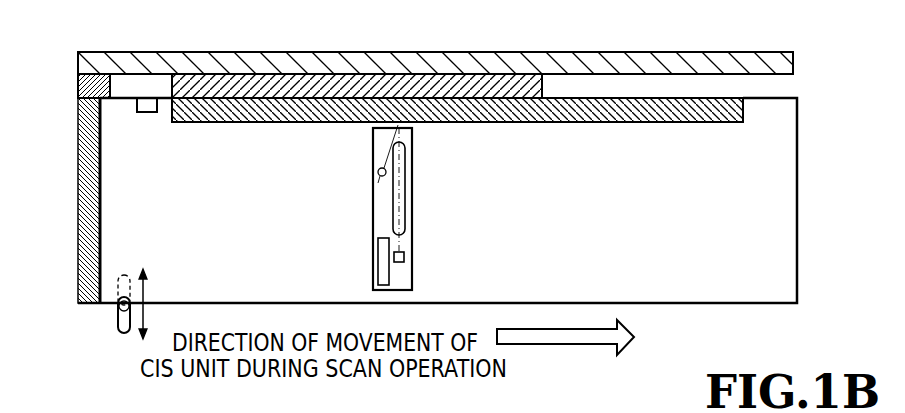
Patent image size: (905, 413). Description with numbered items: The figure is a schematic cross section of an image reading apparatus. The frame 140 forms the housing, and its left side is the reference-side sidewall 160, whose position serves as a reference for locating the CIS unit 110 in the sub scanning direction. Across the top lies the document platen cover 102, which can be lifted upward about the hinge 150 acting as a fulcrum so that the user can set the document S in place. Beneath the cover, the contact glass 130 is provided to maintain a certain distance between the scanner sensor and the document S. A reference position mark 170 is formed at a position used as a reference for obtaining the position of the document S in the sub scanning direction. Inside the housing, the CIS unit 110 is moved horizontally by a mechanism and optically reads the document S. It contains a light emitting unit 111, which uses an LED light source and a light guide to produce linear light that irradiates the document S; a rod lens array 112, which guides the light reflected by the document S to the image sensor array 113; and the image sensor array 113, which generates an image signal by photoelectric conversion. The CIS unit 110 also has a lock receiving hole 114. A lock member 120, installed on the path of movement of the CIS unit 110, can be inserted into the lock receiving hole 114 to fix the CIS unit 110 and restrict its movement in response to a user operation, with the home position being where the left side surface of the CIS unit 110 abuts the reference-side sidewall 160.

The document platen cover 102 is at (600, 52).
The document S is at (493, 88).
The contact glass 130 is at (718, 98).
The hinge 150 is at (78, 91).
The frame 140 is at (698, 305).
The reference-side sidewall 160 is at (78, 223).
The reference position mark 170 is at (140, 112).
The CIS unit 110 is at (413, 150).
The light emitting unit 111 is at (378, 183).
The rod lens array 112 is at (404, 200).
The image sensor array 113 is at (405, 257).
The lock receiving hole 114 is at (383, 277).
The lock member 120 is at (118, 318).